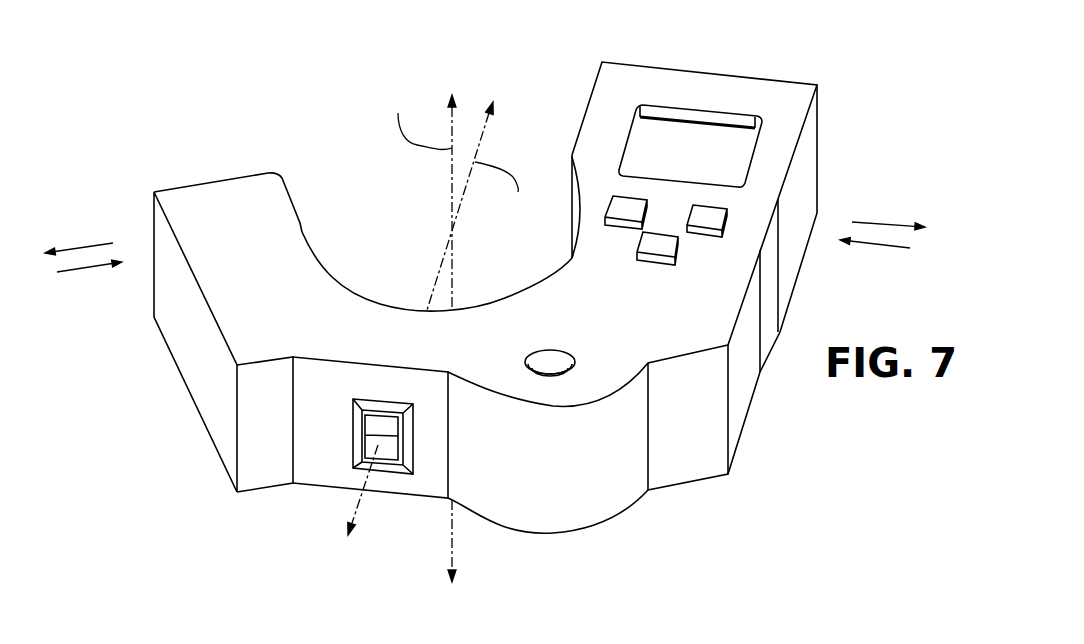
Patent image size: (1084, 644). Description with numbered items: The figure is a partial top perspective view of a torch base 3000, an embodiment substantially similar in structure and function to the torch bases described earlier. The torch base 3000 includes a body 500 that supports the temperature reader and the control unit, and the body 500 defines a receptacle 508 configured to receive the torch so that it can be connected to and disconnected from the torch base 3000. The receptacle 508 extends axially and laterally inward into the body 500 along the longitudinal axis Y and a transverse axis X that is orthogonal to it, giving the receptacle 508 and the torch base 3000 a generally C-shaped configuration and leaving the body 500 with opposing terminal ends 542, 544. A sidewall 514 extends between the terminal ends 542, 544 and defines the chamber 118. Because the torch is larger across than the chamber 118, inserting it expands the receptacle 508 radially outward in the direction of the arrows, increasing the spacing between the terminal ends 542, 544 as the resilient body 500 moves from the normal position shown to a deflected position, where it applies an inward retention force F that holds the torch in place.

The torch base 3000 is at (491, 294).
The body 500 is at (527, 268).
The terminal end 542 is at (203, 183).
The terminal end 544 is at (692, 70).
The sidewall 514 is at (345, 287).
The chamber 118 is at (368, 178).
The receptacle 508 is at (473, 325).